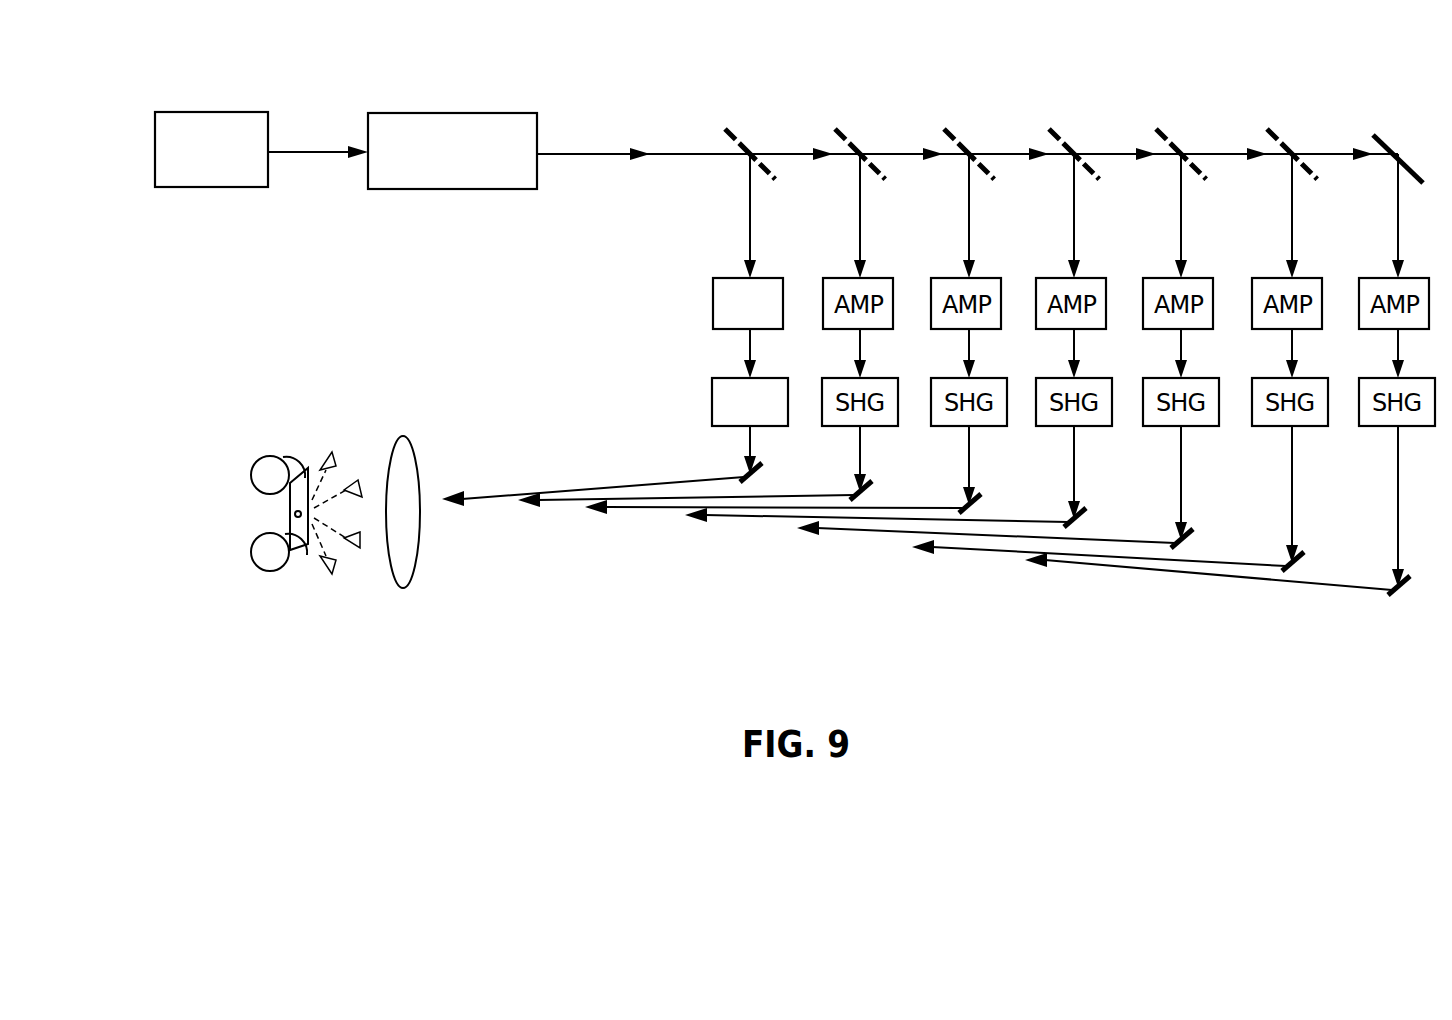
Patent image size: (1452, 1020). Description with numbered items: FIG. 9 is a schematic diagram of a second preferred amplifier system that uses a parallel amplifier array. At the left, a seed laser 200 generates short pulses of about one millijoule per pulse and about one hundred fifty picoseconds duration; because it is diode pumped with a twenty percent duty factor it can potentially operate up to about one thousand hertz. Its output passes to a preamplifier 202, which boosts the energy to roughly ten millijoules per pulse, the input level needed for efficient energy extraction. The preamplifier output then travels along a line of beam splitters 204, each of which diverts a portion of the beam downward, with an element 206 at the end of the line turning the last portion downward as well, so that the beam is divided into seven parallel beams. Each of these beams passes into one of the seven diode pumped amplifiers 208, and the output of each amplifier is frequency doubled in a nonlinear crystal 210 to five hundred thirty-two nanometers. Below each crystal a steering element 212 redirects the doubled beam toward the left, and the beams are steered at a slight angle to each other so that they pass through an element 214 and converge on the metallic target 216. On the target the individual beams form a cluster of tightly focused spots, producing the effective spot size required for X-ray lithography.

The seed laser 200 is at (183, 111).
The preamplifier 202 is at (408, 112).
The beam splitters 204 is at (742, 140).
The mirror 206 is at (1375, 136).
The amplifiers 208 is at (713, 300).
The nonlinear crystal 210 is at (712, 403).
The turning mirror 212 is at (1182, 552).
The lens 214 is at (412, 582).
The target 216 is at (270, 462).